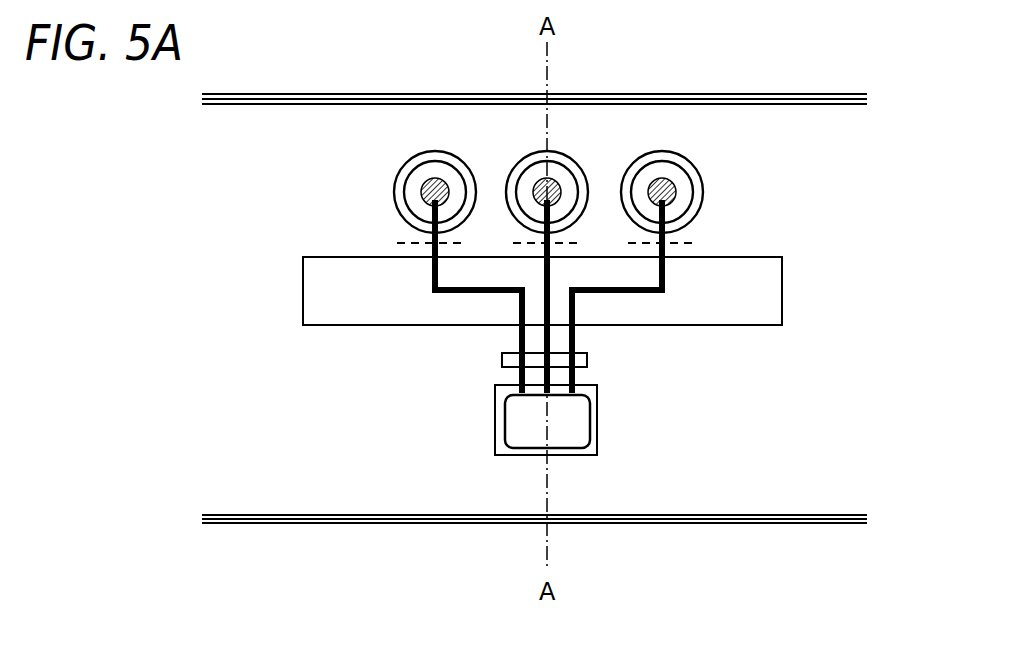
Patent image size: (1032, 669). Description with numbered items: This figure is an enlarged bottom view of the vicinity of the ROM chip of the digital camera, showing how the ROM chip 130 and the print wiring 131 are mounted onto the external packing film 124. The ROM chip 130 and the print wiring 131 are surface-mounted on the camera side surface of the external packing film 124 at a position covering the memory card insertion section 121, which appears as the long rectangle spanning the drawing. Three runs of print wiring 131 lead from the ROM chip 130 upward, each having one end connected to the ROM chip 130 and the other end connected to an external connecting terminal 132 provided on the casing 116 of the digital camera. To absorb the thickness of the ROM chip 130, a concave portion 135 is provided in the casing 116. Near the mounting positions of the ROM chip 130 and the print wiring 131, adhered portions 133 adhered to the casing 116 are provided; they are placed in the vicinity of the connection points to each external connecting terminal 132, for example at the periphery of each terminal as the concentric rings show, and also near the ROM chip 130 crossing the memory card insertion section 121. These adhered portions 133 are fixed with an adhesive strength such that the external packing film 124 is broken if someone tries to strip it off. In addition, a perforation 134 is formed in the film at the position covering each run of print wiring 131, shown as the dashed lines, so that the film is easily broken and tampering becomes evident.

The casing 116 is at (838, 117).
The memory card insertion section 121 is at (785, 270).
The external packing film 124 is at (716, 93).
The ROM chip 130 is at (598, 425).
The print wiring 131 is at (545, 313).
The external connecting terminal 132 is at (428, 186).
The adhered portion 133 is at (420, 158).
The perforation 134 is at (415, 243).
The concave portion 135 is at (592, 455).